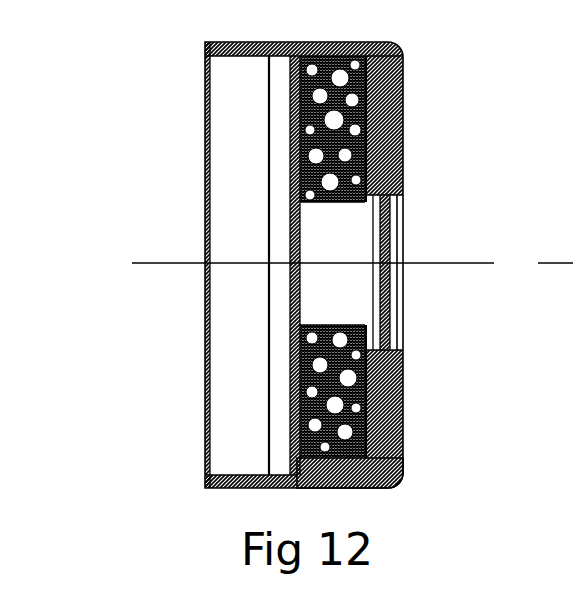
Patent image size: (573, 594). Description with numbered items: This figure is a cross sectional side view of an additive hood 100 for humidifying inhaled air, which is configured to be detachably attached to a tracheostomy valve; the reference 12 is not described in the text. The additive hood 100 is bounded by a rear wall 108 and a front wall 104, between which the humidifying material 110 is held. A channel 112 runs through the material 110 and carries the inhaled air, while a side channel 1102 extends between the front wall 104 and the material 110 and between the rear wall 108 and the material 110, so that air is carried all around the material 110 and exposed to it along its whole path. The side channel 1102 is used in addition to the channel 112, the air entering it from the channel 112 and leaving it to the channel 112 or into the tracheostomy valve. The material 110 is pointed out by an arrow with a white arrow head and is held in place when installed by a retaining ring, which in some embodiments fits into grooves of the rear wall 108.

The additive hood 100 is at (478, 32).
The housing 12 is at (572, 99).
The rear wall 108 is at (238, 191).
The side channel 1102 is at (272, 392).
The channel 112 is at (333, 283).
The front wall 104 is at (420, 399).
The material 110 is at (383, 455).